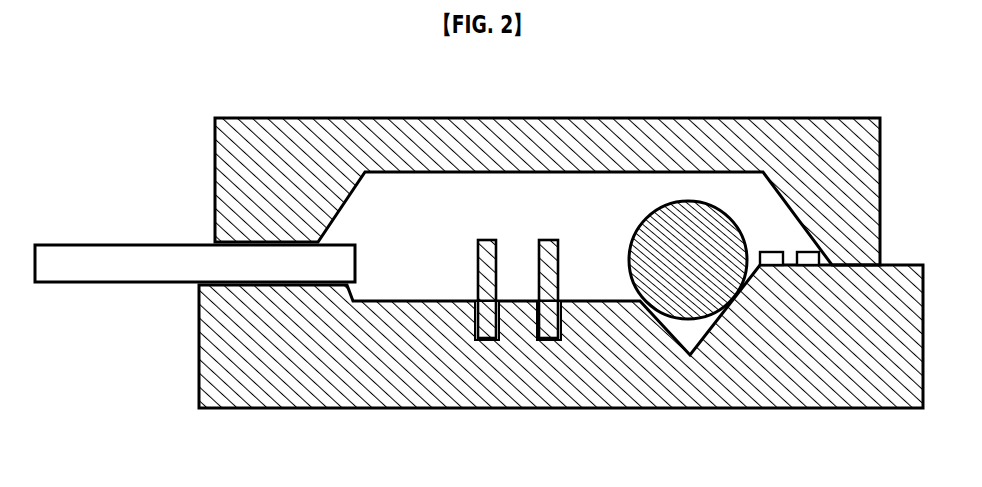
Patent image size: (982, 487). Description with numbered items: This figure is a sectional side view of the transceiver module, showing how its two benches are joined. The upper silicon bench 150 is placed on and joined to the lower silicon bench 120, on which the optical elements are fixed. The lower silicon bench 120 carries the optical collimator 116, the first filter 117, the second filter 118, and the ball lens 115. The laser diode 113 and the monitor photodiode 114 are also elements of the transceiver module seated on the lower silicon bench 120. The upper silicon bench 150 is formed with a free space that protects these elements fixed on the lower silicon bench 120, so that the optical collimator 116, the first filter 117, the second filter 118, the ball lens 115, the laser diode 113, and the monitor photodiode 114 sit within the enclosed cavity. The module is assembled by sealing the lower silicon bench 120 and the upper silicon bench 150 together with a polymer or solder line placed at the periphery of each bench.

The upper silicon bench 150 is at (460, 101).
The lower silicon bench 120 is at (573, 409).
The optical collimator 116 is at (140, 244).
The second filter 118 is at (488, 240).
The first filter 117 is at (550, 240).
The ball lens 115 is at (688, 202).
The laser diode 113 is at (772, 252).
The monitor photodiode 114 is at (809, 251).